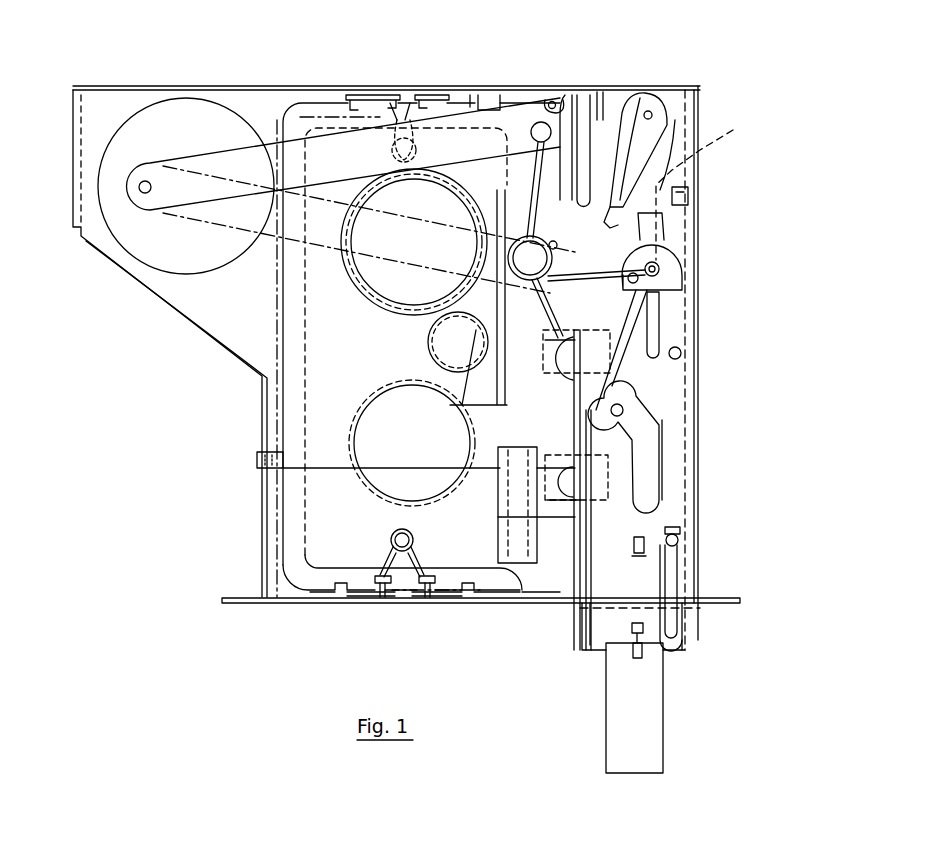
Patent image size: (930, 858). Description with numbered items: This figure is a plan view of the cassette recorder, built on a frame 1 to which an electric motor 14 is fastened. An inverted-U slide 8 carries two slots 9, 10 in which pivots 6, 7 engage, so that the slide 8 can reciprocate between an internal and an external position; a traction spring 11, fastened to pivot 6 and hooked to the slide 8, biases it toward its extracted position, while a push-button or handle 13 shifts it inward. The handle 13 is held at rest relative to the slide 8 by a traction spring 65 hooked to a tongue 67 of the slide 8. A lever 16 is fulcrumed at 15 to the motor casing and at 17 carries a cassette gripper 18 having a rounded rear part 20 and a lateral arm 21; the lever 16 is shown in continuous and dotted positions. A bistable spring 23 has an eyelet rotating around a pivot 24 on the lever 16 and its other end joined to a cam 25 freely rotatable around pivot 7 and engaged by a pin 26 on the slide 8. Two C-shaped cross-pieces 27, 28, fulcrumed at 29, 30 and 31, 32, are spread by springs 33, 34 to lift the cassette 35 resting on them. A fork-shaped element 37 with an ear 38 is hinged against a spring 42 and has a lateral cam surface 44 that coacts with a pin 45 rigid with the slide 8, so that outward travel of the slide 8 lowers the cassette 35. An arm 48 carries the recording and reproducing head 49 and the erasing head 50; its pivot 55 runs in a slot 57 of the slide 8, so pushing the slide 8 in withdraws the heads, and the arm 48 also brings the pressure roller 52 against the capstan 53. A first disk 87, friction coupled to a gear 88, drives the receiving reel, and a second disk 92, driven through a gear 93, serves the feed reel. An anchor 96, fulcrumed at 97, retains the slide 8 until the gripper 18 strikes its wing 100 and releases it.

The frame 1 is at (205, 300).
The pivot 6 is at (680, 540).
The pivot 7 is at (660, 268).
The slide 8 is at (600, 650).
The slot 9 is at (685, 632).
The slot 10 is at (655, 325).
The traction spring 11 is at (680, 195).
The push-button or handle 13 is at (655, 725).
The electric motor 14 is at (160, 258).
The pivot pin 15 is at (138, 187).
The lever 16 is at (255, 150).
The fulcrum 17 is at (556, 100).
The cassette gripper 18 is at (630, 100).
The rounded rear part 20 is at (594, 130).
The lateral arm 21 is at (478, 95).
The bistable spring 23 is at (512, 215).
The pivot 24 is at (540, 120).
The cam 25 is at (662, 247).
The pin 26 is at (682, 350).
The C-shaped cross-piece 27 is at (318, 590).
The C-shaped cross-piece 28 is at (486, 590).
The fulcrum 29 is at (380, 598).
The fulcrum 30 is at (375, 93).
The fulcrum 31 is at (428, 598).
The fulcrum 32 is at (430, 93).
The spring 33 is at (412, 538).
The spring 34 is at (415, 152).
The cassette 35 is at (520, 600).
The fork-shaped element 37 is at (320, 428).
The ear 38 is at (257, 462).
The spring 42 is at (512, 494).
The lateral cam surface 44 is at (590, 600).
The pin 45 is at (580, 590).
The arm 48 is at (706, 189).
The recording and reproducing head 49 is at (560, 362).
The erasing head 50 is at (560, 465).
The pressure roller 52 is at (583, 200).
The capstan 53 is at (553, 241).
The pivot 55 is at (630, 417).
The slot 57 is at (663, 472).
The traction spring 65 is at (645, 597).
The tongue 67 is at (680, 530).
The first disk 87 is at (390, 283).
The gear 88 is at (355, 285).
The second disk 92 is at (382, 480).
The gear 93 is at (428, 350).
The anchor 96 is at (640, 158).
The fulcrum 97 is at (648, 95).
The wing 100 is at (600, 90).